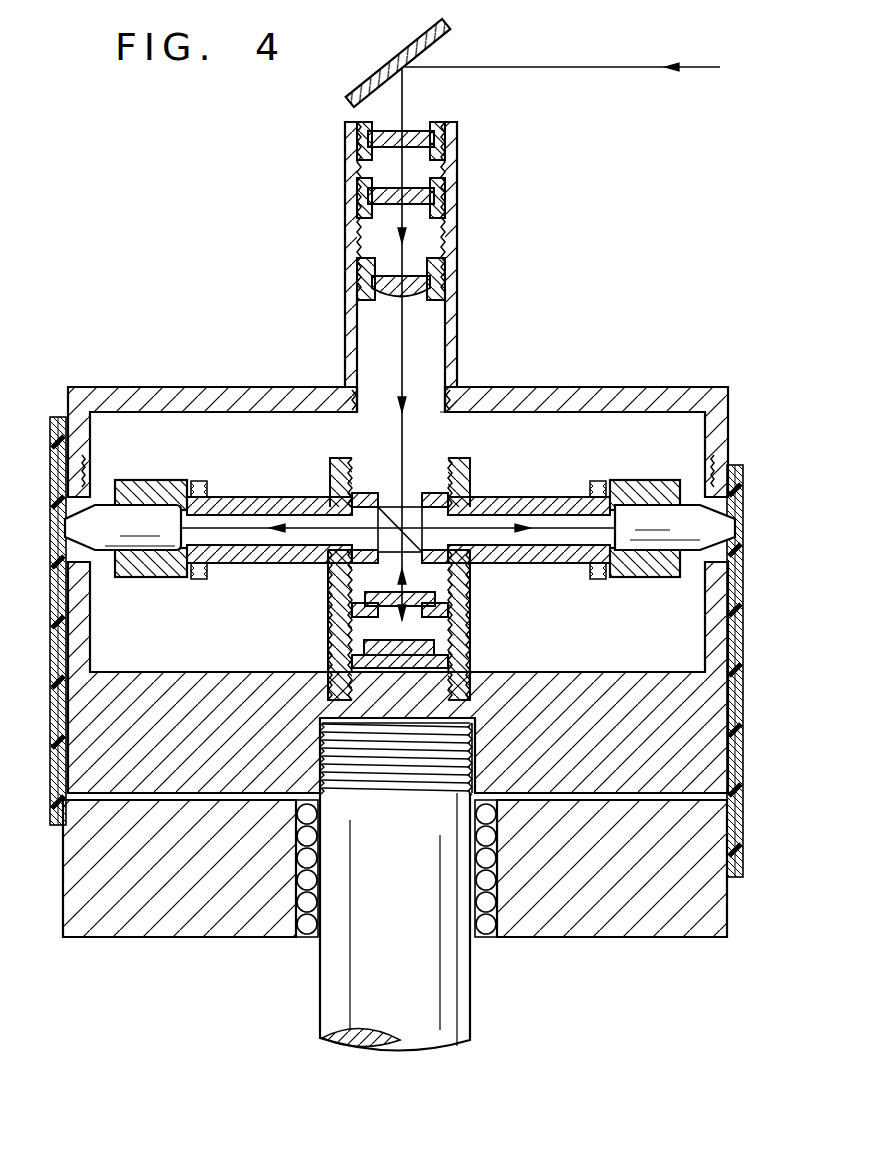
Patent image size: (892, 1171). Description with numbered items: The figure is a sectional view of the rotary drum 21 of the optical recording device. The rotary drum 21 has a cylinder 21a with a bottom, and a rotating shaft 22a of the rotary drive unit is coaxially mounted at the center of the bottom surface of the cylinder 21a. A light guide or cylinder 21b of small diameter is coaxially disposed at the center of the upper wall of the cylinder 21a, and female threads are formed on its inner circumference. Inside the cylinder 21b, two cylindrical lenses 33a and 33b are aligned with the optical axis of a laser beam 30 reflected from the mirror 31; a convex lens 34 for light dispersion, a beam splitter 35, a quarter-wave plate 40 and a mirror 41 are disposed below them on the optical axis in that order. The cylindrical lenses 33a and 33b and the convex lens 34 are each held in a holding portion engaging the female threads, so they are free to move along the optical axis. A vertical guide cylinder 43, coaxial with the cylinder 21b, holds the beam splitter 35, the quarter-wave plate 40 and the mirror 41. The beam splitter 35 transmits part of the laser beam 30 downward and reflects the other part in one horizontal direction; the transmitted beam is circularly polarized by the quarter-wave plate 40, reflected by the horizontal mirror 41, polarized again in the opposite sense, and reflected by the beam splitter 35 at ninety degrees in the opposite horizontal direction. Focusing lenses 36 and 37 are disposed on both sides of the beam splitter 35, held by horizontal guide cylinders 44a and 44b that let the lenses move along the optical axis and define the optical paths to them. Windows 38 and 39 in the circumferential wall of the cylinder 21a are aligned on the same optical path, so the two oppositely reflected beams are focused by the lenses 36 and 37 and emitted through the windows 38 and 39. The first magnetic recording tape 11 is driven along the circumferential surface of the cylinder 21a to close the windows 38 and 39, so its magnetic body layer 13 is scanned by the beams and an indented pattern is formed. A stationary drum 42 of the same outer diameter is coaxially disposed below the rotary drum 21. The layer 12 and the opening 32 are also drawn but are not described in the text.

The first magnetic recording tape 11 is at (745, 746).
The second layer of laminated plate 12 is at (740, 792).
The magnetic body layer 13 is at (730, 831).
The rotary drum 21 is at (718, 640).
The cylinder 21a is at (718, 445).
The light guide cylinder 21b is at (451, 350).
The rotating shaft 22a is at (455, 978).
The laser beam 30 is at (551, 67).
The mirror 31 is at (390, 60).
The opening 32 is at (438, 418).
The cylindrical lens 33a is at (420, 131).
The cylindrical lens 33b is at (418, 190).
The convex lens 34 is at (403, 293).
The beam splitter 35 is at (396, 505).
The focusing lens 36 is at (133, 510).
The focusing lens 37 is at (635, 518).
The window 38 is at (73, 562).
The window 39 is at (718, 567).
The quarter-wave plate 40 is at (412, 597).
The mirror 41 is at (453, 648).
The stationary drum 42 is at (715, 915).
The vertical guide cylinder 43 is at (333, 633).
The horizontal guide cylinder 44a is at (256, 500).
The horizontal guide cylinder 44b is at (528, 505).